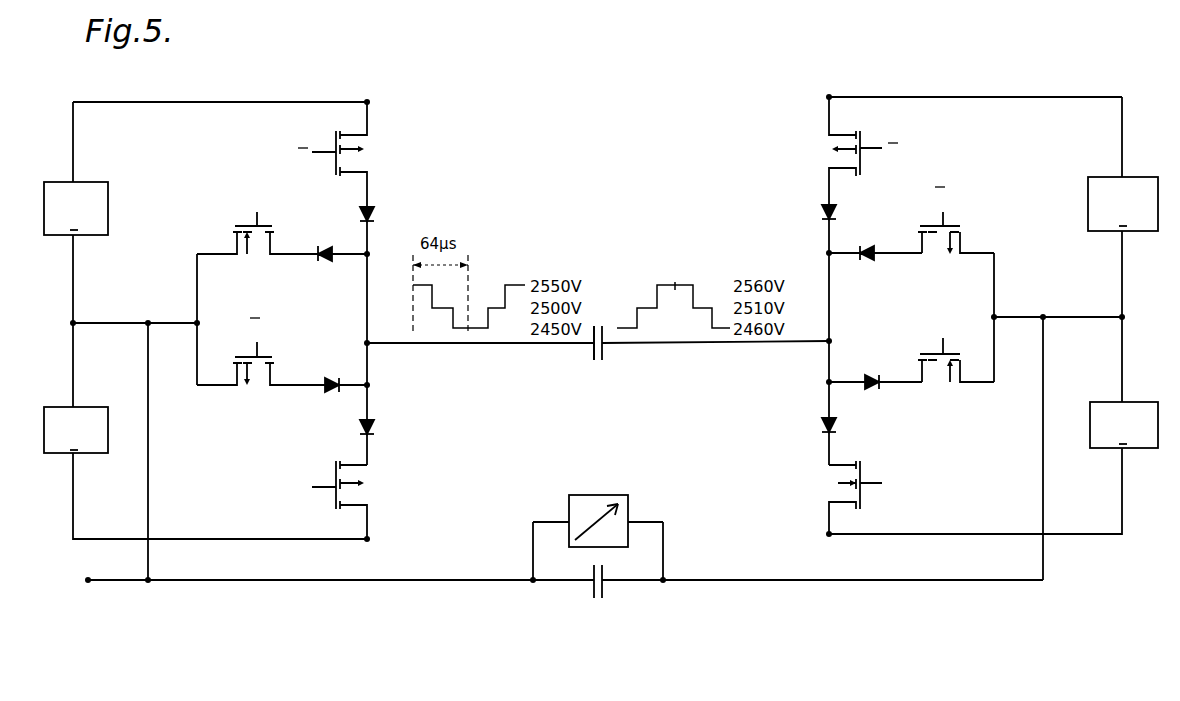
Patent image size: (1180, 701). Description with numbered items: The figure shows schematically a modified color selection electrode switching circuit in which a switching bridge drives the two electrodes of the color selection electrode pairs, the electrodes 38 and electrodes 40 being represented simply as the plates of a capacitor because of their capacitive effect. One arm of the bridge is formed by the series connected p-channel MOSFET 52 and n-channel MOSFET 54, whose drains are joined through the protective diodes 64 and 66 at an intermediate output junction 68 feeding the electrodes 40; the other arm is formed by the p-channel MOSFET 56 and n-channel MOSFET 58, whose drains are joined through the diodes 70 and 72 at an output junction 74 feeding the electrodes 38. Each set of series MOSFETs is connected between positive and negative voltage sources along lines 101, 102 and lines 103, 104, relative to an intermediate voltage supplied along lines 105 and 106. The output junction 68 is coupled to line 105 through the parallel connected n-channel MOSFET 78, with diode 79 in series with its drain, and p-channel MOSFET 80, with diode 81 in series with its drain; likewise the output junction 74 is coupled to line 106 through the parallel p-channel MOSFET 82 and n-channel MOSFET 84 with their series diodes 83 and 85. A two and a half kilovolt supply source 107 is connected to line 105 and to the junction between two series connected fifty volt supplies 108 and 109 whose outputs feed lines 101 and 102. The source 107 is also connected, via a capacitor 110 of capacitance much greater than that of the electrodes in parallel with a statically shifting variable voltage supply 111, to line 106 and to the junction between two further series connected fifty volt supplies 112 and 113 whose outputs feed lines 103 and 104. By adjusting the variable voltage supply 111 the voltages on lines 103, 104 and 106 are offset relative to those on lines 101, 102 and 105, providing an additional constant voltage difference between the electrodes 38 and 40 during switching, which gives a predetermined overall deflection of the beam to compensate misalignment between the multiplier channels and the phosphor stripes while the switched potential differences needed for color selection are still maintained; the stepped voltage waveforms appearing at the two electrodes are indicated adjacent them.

The electrodes 38 is at (603, 358).
The electrodes 40 is at (591, 358).
The p-channel MOSFET 52 is at (378, 165).
The n-channel MOSFET 54 is at (372, 478).
The p-channel MOSFET 56 is at (826, 158).
The n-channel MOSFET 58 is at (826, 470).
The diode 64 is at (374, 214).
The diode 66 is at (374, 428).
The output junction 68 is at (370, 347).
The diode 70 is at (822, 212).
The diode 72 is at (822, 425).
The output junction 74 is at (833, 338).
The n-channel MOSFET 78 is at (235, 222).
The diode 79 is at (326, 262).
The p-channel MOSFET 80 is at (246, 392).
The diode 81 is at (334, 375).
The p-channel MOSFET 82 is at (965, 223).
The diode 83 is at (868, 262).
The n-channel MOSFET 84 is at (948, 402).
The diode 85 is at (868, 375).
The line 101 is at (290, 102).
The line 102 is at (243, 539).
The line 103 is at (970, 97).
The line 104 is at (912, 534).
The line 105 is at (115, 323).
The line 106 is at (1012, 317).
The supply source 107 is at (88, 585).
The voltage supply 108 is at (108, 210).
The voltage supply 109 is at (85, 407).
The capacitor 110 is at (604, 590).
The variable voltage supply 111 is at (625, 497).
The voltage supply 112 is at (1135, 232).
The voltage supply 113 is at (1132, 402).